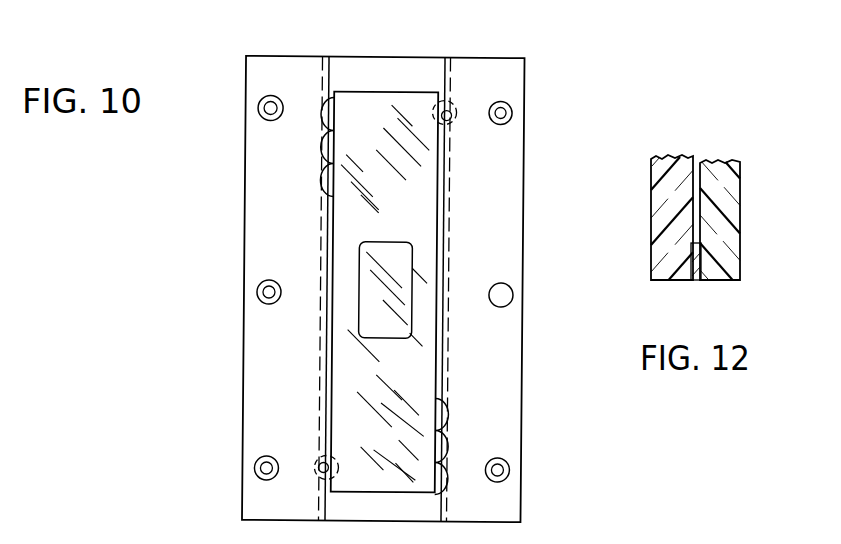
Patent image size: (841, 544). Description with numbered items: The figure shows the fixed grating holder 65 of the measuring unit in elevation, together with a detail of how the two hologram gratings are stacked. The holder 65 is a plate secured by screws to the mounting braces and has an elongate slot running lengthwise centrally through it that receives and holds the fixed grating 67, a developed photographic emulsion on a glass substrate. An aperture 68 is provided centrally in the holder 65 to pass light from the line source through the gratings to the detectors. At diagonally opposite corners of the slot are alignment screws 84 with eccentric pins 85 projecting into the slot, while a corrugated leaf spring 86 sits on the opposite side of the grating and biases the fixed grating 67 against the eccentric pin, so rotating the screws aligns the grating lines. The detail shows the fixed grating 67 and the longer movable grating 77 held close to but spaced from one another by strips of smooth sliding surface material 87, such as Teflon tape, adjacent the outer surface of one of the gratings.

In FIG. 10, the fixed grating holder 65 is at (500, 223).
In FIG. 10, the fixed grating 67 is at (370, 118).
In FIG. 12, the fixed grating 67 is at (732, 228).
In FIG. 10, the aperture 68 is at (404, 298).
In FIG. 10, the alignment screws 84 is at (452, 104).
In FIG. 10, the eccentric pins 85 is at (447, 117).
In FIG. 10, the corrugated leaf spring 86 is at (334, 103).
In FIG. 12, the movable grating 77 is at (655, 203).
In FIG. 12, the strips of smooth sliding surface material 87 is at (694, 282).